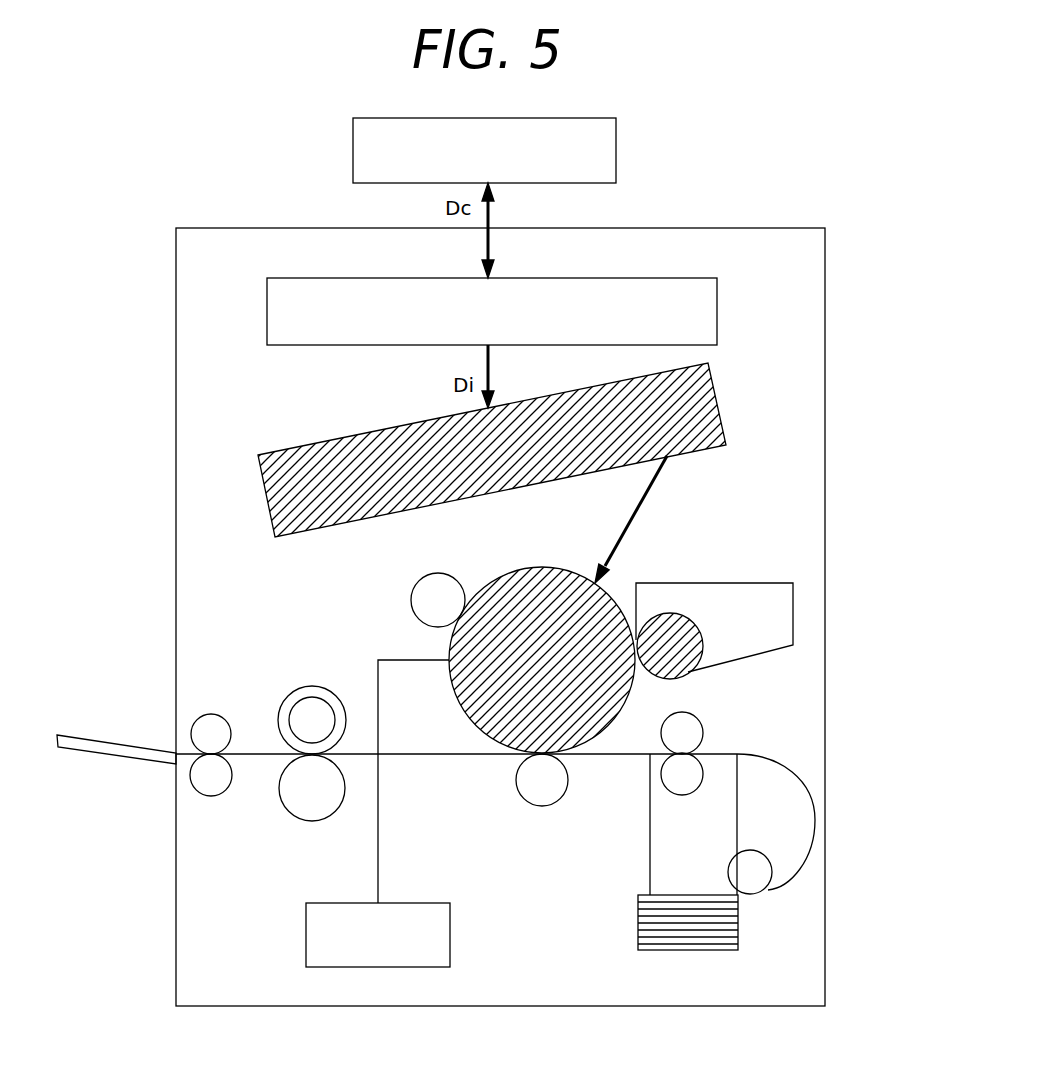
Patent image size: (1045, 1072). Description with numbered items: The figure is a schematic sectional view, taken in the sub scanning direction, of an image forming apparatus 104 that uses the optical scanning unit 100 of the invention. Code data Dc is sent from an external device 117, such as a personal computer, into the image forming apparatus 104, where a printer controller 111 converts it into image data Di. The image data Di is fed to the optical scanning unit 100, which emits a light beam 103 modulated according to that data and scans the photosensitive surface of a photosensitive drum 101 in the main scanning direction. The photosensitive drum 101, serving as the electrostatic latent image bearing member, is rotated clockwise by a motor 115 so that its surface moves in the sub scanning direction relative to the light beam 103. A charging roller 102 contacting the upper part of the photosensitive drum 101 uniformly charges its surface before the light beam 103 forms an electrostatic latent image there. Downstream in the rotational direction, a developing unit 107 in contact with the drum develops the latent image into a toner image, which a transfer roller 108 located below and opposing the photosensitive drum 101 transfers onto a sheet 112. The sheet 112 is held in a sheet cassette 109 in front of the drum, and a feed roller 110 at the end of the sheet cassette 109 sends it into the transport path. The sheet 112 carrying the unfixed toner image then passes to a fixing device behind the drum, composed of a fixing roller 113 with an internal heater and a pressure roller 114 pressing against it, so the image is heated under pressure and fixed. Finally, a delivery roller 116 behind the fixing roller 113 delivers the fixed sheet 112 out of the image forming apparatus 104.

The optical scanning unit 100 is at (348, 437).
The photosensitive drum 101 is at (627, 691).
The charging roller 102 is at (436, 598).
The light beam 103 is at (643, 512).
The image forming apparatus 104 is at (776, 228).
The developing unit 107 is at (793, 598).
The transfer roller 108 is at (548, 800).
The sheet cassette 109 is at (638, 920).
The feed roller 110 is at (745, 872).
The printer controller 111 is at (717, 300).
The sheet 112 is at (425, 756).
The fixing roller 113 is at (302, 712).
The pressure roller 114 is at (290, 800).
The motor 115 is at (306, 935).
The delivery roller 116 is at (221, 725).
The external device 117 is at (616, 150).